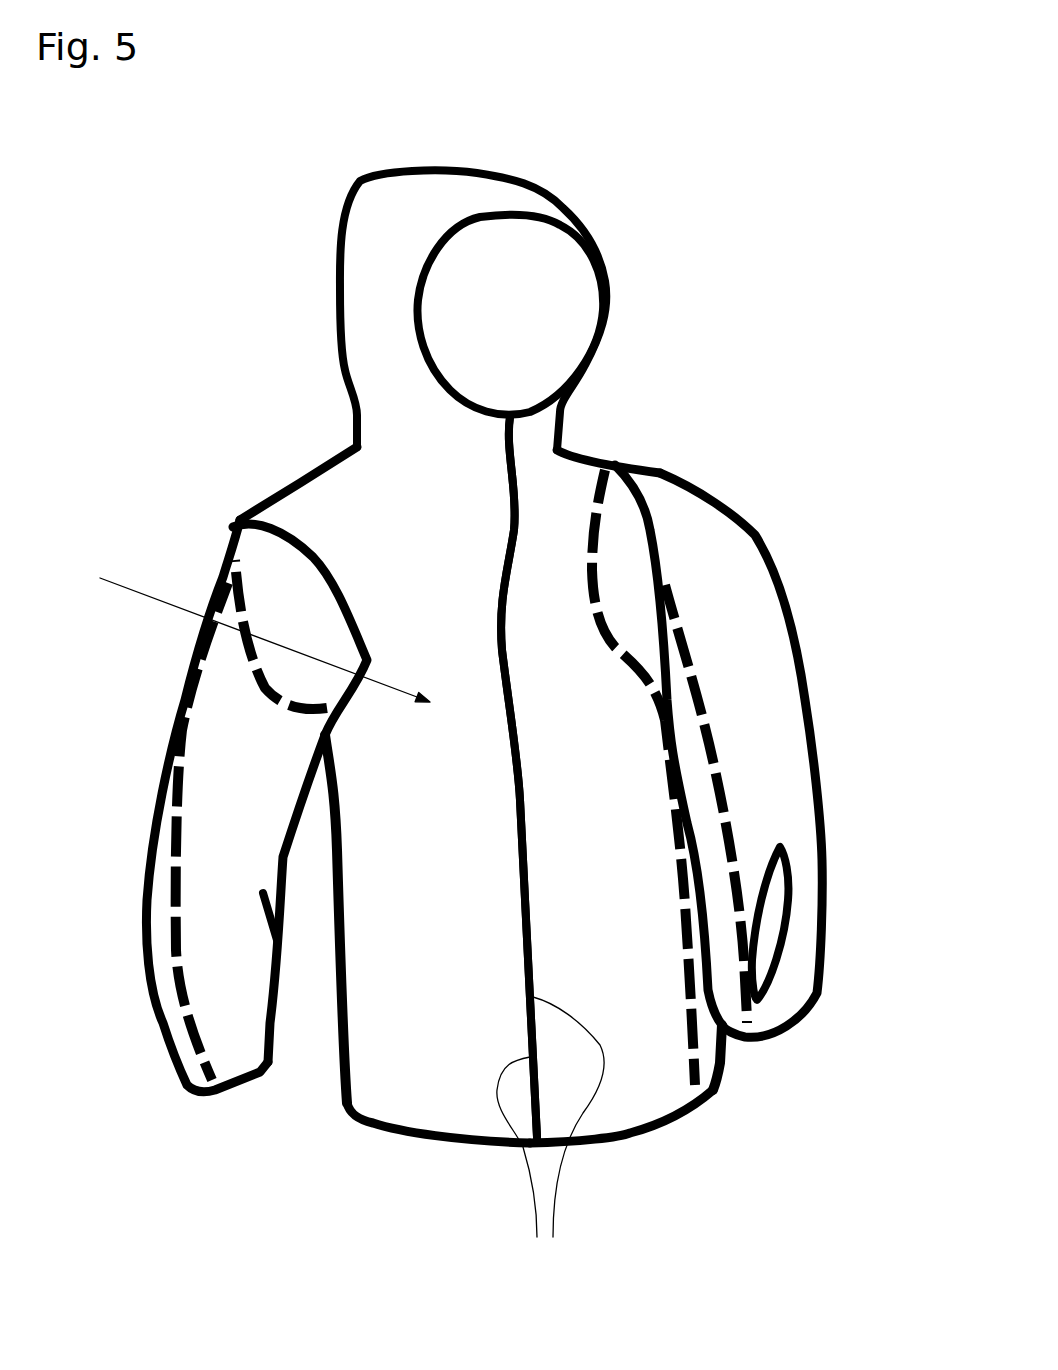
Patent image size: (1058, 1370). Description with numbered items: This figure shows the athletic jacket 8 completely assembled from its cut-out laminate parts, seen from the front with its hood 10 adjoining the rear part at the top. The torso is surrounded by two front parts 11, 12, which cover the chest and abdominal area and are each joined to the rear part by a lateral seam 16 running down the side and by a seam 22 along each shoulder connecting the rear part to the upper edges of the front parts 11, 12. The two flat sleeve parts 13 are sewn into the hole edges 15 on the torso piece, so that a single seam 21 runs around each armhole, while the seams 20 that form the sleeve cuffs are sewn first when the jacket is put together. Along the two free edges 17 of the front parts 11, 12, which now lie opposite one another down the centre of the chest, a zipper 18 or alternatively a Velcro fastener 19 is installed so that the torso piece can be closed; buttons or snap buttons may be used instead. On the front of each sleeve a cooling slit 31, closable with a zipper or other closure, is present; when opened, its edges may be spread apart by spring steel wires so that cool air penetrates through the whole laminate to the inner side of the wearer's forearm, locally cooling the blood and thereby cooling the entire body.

The hood 10 is at (380, 257).
The shoulder seam 22 is at (310, 540).
The sleeve seam 21 is at (228, 582).
The athletic jacket 8 is at (239, 629).
The sleeve part 13 is at (223, 903).
The hole edge 15 is at (278, 687).
The sleeve cuff seam 20 is at (178, 990).
The cooling slit 31 is at (273, 923).
The lateral seam 16 is at (335, 965).
The zipper 18 is at (520, 915).
The Velcro fastener 19 is at (520, 915).
The front part 11 is at (433, 1047).
The front part 12 is at (637, 1047).
The front edge 17 is at (550, 1141).